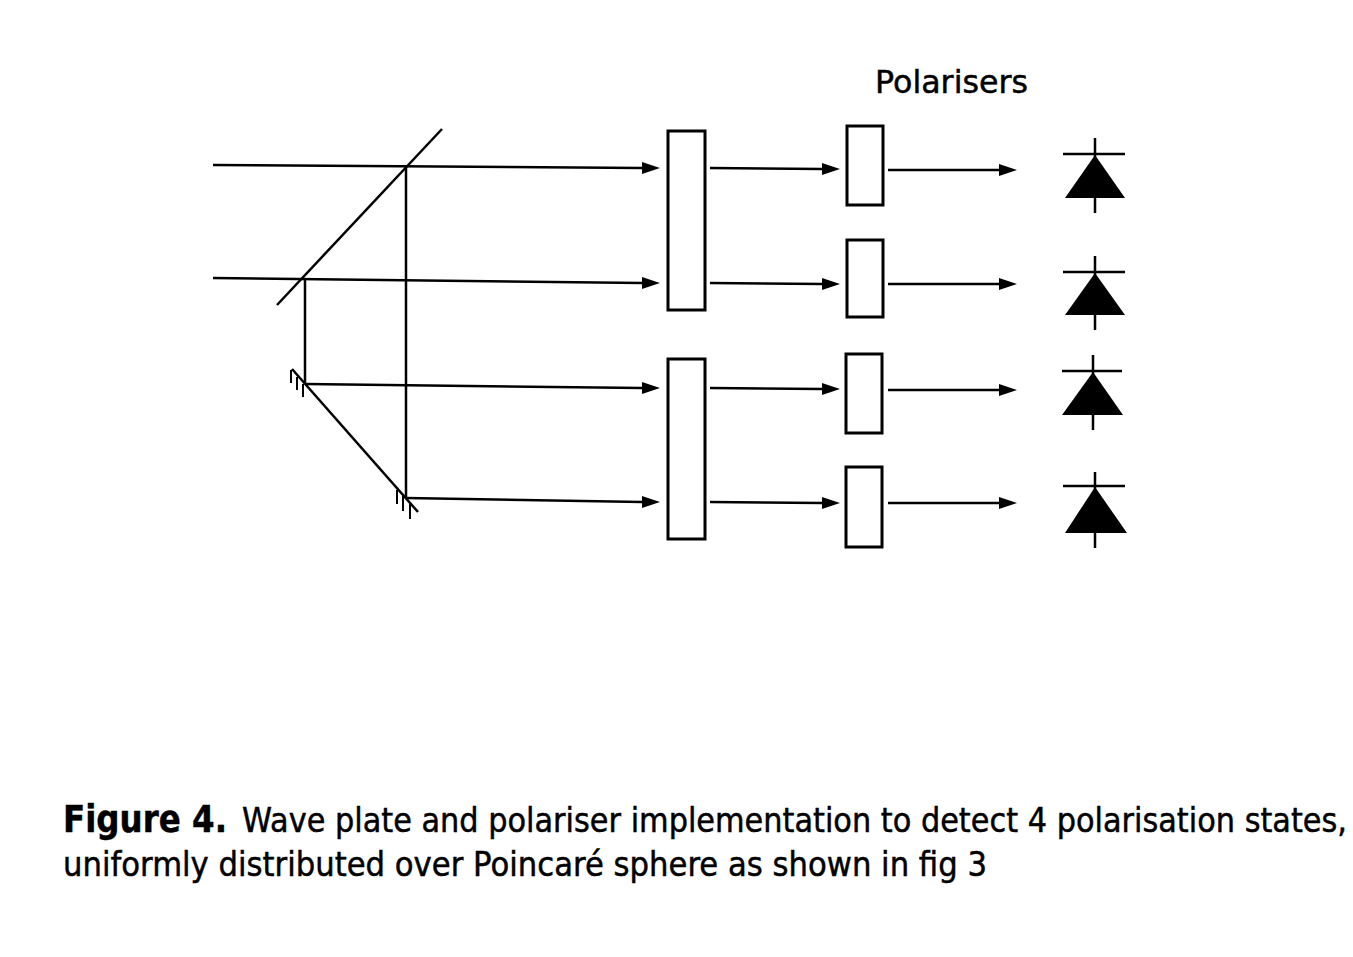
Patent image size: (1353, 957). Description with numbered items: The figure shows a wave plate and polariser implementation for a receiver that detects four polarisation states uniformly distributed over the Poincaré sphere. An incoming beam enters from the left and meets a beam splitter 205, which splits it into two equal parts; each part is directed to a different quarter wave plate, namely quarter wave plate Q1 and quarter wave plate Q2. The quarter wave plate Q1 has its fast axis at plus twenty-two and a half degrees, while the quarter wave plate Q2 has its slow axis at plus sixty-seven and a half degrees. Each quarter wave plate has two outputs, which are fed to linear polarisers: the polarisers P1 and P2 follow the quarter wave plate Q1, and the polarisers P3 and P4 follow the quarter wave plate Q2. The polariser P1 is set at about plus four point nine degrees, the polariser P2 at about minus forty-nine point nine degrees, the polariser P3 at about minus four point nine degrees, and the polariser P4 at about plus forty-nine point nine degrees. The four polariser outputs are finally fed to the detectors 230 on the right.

The beam splitter 205 is at (337, 288).
The detectors 230 is at (1192, 384).
The quarter wave plate Q1 is at (672, 166).
The quarter wave plate Q2 is at (652, 502).
The polariser P1 is at (942, 158).
The polariser P2 is at (944, 275).
The polariser P3 is at (933, 387).
The polariser P4 is at (952, 505).